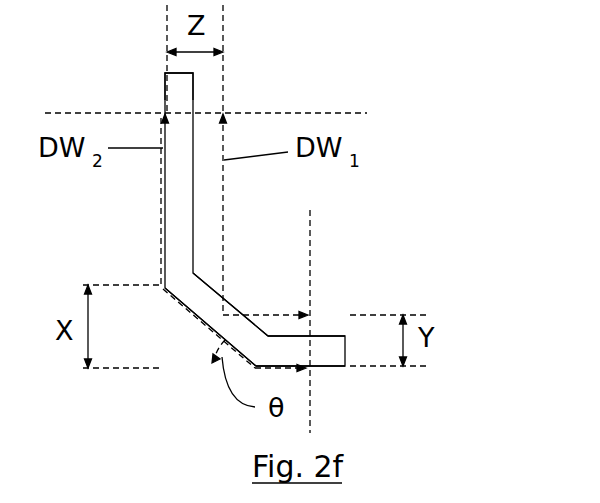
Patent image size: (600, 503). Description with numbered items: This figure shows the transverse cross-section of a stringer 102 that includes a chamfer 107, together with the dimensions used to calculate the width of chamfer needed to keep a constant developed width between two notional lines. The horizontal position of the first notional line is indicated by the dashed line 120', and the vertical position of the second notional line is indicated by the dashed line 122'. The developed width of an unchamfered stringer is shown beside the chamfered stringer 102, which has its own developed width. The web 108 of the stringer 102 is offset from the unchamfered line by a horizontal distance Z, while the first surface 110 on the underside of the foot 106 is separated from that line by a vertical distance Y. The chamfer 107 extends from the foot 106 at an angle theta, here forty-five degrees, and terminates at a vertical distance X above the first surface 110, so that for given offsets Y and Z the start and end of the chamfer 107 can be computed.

The stringer 102 is at (175, 196).
The foot 106 is at (330, 347).
The chamfer 107 is at (195, 298).
The web 108 is at (177, 100).
The first surface 110 is at (335, 376).
The dashed line 120' is at (362, 316).
The dashed line 122' is at (250, 83).